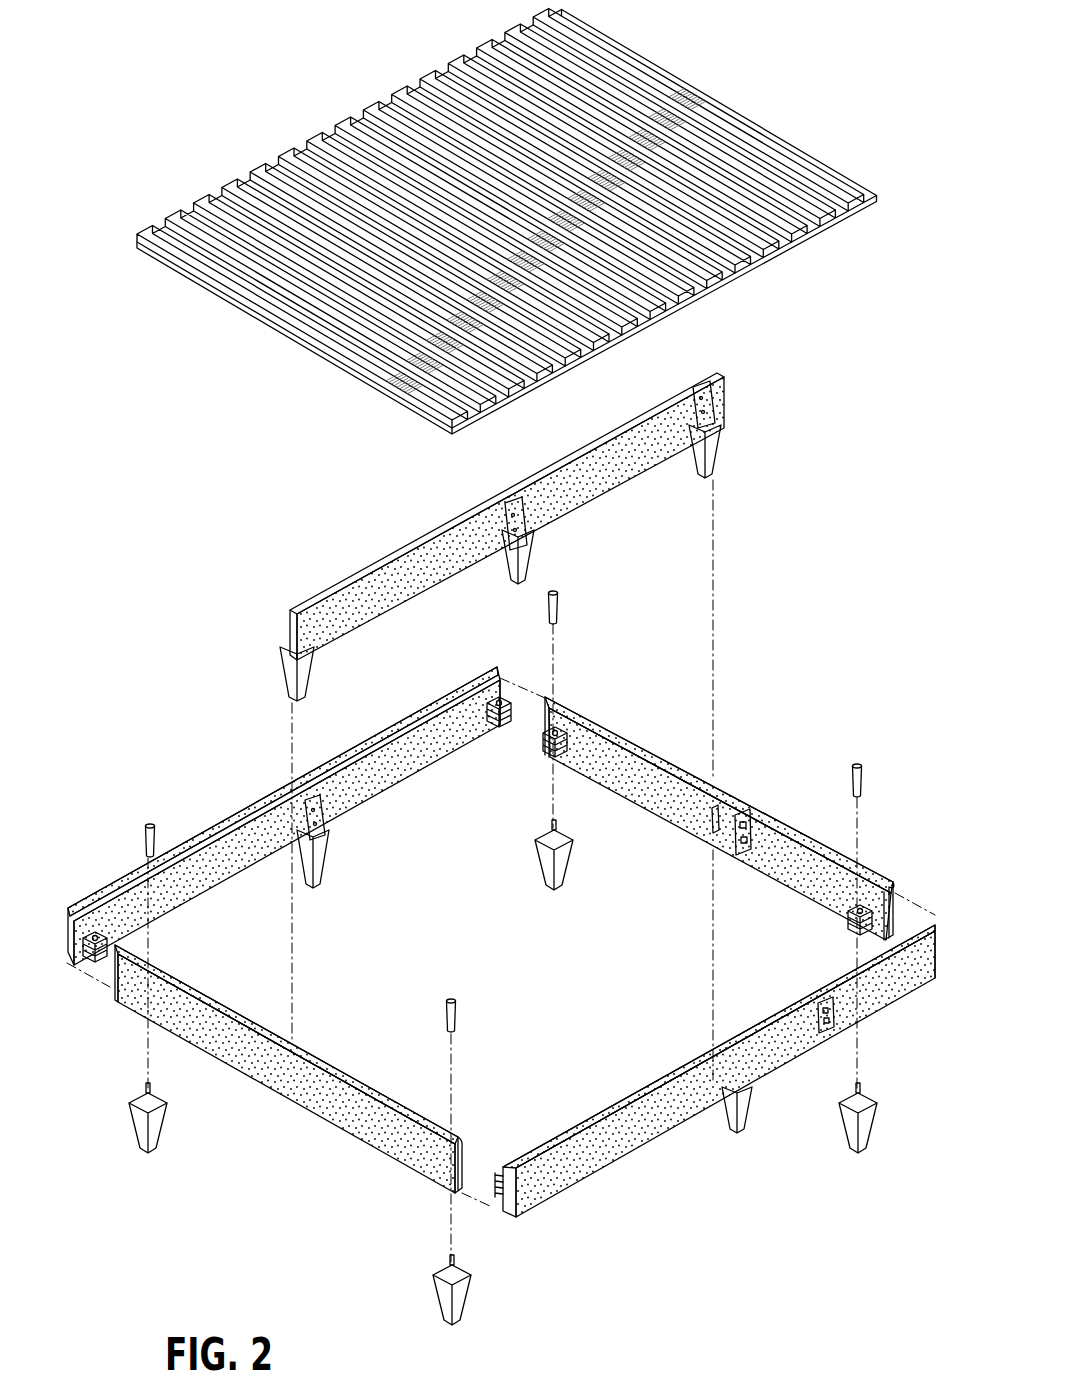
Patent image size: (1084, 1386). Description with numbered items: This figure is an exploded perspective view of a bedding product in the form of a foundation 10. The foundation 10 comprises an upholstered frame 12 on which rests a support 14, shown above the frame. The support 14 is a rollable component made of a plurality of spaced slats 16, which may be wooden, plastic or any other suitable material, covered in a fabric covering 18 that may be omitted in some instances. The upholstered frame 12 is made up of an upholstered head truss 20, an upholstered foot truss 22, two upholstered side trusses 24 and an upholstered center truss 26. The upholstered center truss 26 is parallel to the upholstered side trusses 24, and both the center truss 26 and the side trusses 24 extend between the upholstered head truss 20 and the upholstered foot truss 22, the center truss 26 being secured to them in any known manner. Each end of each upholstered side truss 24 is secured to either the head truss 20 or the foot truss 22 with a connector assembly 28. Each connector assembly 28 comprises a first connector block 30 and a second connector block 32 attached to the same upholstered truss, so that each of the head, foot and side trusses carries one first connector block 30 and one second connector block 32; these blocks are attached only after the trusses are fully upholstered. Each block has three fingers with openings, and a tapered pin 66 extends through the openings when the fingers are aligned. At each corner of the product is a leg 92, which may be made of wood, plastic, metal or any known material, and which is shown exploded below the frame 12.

The foundation 10 is at (797, 62).
The upholstered frame 12 is at (885, 1028).
The support 14 is at (820, 160).
The slats 16 is at (422, 87).
The fabric covering 18 is at (290, 188).
The upholstered head truss 20 is at (340, 1122).
The upholstered foot truss 22 is at (625, 730).
The upholstered side trusses 24 is at (263, 802).
The upholstered center truss 26 is at (373, 570).
The connector assembly 28 is at (506, 748).
The first connector block 30 is at (505, 697).
The second connector block 32 is at (548, 755).
The tapered pin 66 is at (560, 604).
The leg 92 is at (722, 450).